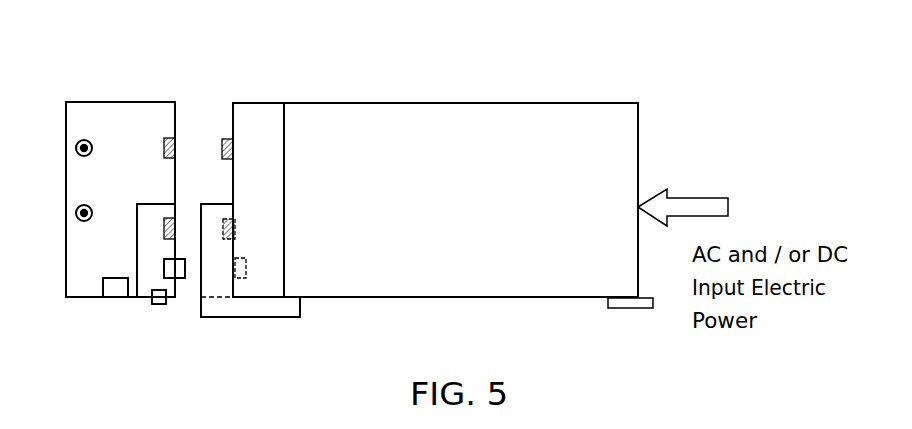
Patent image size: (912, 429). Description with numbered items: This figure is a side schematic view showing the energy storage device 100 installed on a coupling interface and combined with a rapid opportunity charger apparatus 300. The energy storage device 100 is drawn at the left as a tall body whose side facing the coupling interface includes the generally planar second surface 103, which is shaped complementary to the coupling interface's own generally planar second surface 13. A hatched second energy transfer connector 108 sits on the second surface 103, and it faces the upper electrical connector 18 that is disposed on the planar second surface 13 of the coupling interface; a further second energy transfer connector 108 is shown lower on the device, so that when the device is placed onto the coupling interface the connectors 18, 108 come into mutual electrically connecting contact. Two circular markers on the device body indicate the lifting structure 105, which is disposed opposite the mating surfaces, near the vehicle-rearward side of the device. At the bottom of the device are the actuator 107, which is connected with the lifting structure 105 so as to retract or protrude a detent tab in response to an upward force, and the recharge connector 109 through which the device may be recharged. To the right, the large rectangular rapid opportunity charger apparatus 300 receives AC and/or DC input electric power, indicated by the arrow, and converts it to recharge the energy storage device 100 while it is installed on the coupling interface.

The energy storage device 100 is at (84, 90).
The second surface 103 is at (177, 117).
The lifting structure 105 is at (76, 148).
The actuator 107 is at (161, 306).
The second energy transfer connectors 108 is at (164, 144).
The recharge connector 109 is at (118, 288).
The second surface 13 is at (233, 125).
The electrical connectors 18 is at (222, 148).
The rapid opportunity charger apparatus 300 is at (467, 217).